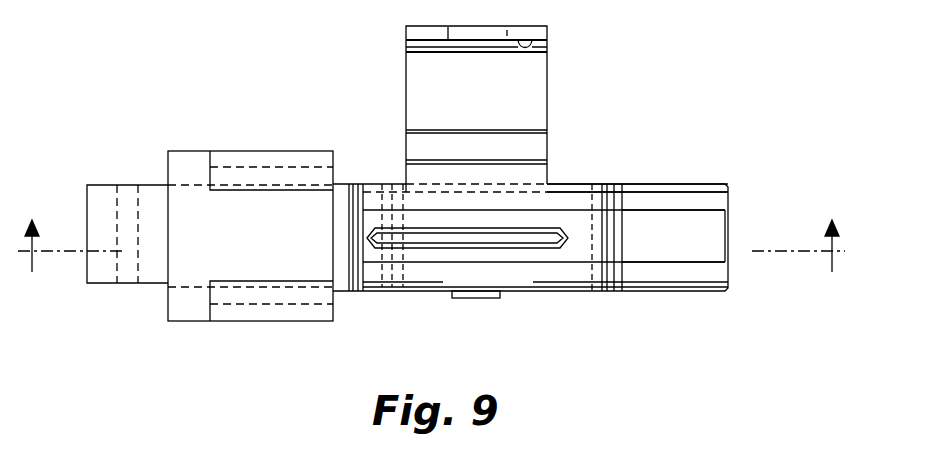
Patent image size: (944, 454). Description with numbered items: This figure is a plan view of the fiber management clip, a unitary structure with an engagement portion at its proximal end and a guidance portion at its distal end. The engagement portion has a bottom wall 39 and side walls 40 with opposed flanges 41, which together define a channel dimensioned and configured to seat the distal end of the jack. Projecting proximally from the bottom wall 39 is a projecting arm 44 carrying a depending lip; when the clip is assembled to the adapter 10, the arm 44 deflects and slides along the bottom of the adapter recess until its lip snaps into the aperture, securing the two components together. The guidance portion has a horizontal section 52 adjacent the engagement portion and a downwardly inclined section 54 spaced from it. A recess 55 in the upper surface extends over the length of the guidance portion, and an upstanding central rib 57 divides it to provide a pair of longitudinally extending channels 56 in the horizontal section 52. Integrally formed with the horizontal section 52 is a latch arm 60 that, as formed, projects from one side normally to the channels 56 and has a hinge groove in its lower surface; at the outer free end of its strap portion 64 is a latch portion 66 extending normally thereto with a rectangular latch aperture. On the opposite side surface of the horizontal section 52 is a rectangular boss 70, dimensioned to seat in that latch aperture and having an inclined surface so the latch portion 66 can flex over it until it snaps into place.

The adapter 10 is at (435, 229).
The bottom wall 39 is at (292, 247).
The side walls 40 is at (282, 322).
The opposed flanges 41 is at (248, 167).
The projecting arm 44 is at (128, 287).
The horizontal section 52 is at (570, 197).
The downwardly inclined section 54 is at (675, 200).
The recess 55 is at (657, 240).
The longitudinally extending channels 56 is at (507, 213).
The upstanding central rib 57 is at (545, 238).
The latch arm 60 is at (556, 109).
The strap portion 64 is at (468, 82).
The latch portion 66 is at (532, 40).
The rectangular boss 70 is at (470, 300).